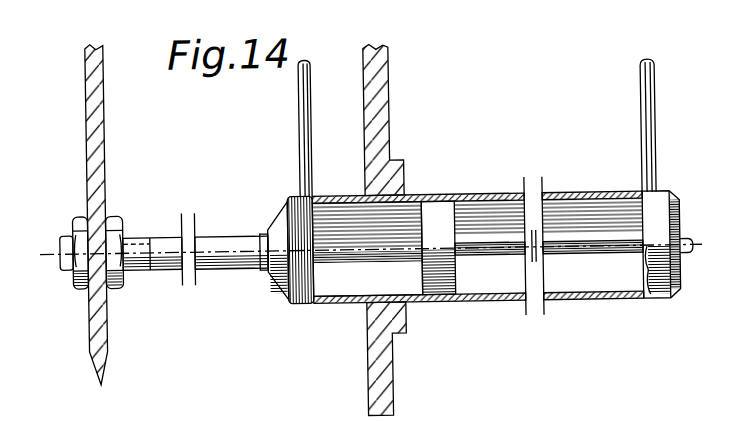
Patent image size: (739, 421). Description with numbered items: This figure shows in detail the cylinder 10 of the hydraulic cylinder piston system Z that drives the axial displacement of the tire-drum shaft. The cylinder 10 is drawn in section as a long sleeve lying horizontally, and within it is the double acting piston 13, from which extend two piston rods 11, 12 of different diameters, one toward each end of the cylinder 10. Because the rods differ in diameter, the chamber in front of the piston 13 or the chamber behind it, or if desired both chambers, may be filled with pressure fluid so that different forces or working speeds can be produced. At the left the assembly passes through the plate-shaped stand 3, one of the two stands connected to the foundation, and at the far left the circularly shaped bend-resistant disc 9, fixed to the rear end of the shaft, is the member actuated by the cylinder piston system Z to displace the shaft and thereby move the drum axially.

The bend-resistant disc 9 is at (97, 132).
The stand 3 is at (382, 110).
The cylinder 10 is at (465, 299).
The piston rod 11 is at (495, 250).
The piston rod 12 is at (350, 241).
The double acting piston 13 is at (442, 214).
The hydraulic cylinder piston system Z is at (647, 306).